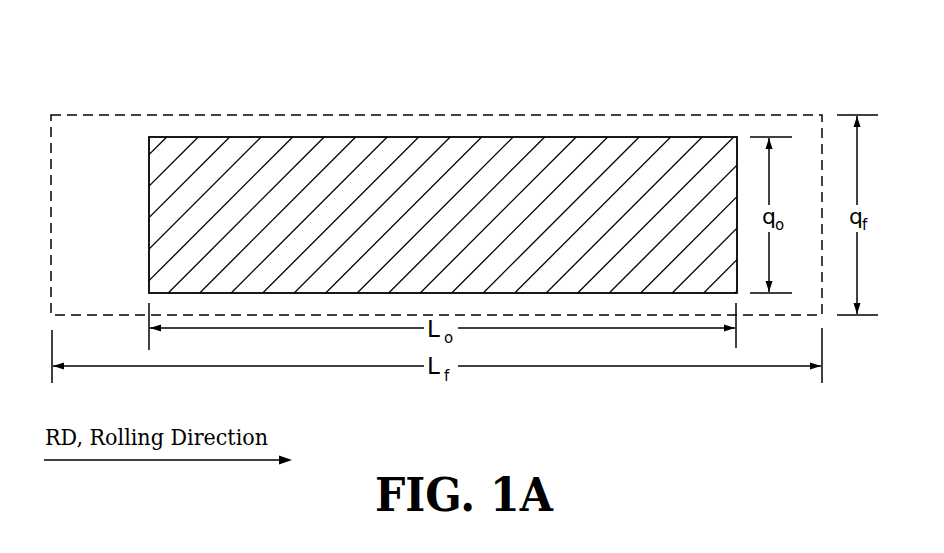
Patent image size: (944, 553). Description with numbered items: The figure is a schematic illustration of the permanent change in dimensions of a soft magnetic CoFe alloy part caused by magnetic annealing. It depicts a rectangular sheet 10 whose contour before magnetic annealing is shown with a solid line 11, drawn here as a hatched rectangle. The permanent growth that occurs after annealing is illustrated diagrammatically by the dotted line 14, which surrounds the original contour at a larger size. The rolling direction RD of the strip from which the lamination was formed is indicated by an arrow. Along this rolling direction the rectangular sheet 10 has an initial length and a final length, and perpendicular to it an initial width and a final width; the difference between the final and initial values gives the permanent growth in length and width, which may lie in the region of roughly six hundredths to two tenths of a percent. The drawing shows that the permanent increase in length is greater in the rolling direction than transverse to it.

The rectangular sheet 10 is at (456, 84).
The solid line 11 is at (250, 137).
The dotted line 14 is at (622, 115).